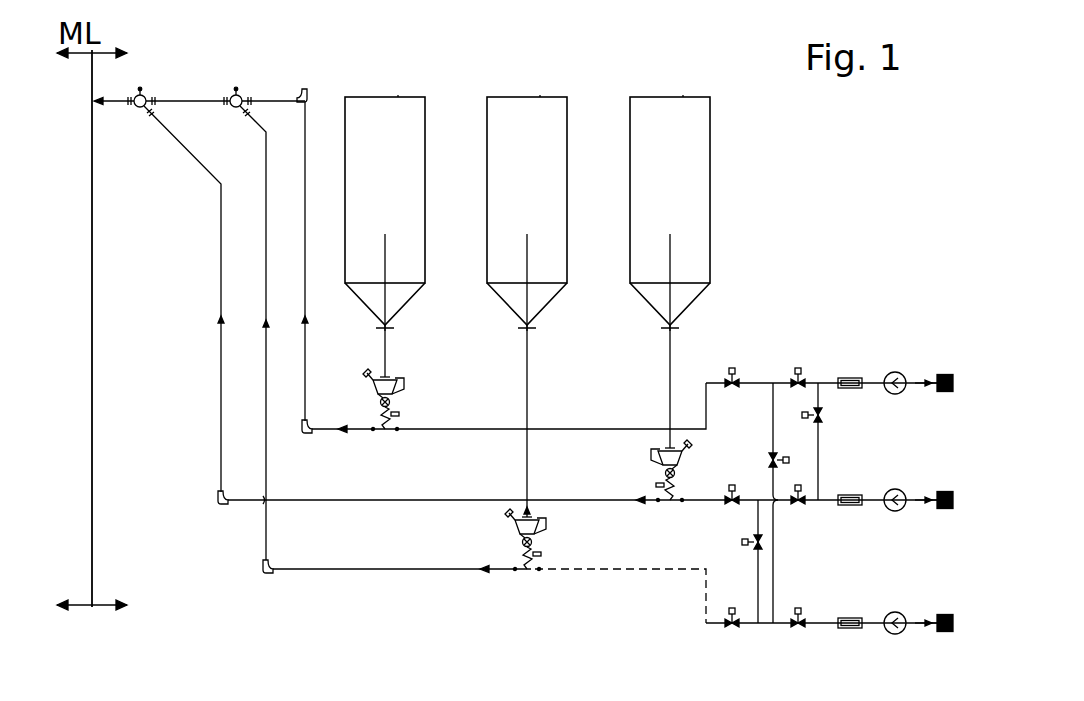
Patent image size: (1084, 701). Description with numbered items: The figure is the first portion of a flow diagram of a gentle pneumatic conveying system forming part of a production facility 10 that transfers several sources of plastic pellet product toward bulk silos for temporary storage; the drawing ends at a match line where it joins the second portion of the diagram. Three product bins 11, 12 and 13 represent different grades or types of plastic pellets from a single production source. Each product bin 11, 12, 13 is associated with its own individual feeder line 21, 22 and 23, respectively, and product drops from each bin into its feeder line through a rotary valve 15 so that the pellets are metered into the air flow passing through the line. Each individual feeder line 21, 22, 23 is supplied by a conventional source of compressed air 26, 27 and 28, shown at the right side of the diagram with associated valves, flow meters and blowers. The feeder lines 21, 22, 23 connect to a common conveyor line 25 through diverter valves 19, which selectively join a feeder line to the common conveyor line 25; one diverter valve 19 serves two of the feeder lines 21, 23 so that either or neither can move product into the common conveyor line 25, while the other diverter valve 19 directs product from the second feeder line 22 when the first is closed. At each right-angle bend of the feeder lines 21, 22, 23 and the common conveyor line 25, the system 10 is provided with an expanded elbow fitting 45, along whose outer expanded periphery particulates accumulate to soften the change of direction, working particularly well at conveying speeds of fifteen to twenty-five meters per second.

The production facility 10 is at (761, 244).
The product bin 11 is at (405, 231).
The product bin 12 is at (703, 180).
The product bin 13 is at (550, 100).
The rotary valve 15 is at (385, 385).
The diverter valve 19 is at (233, 94).
The first feeder line 21 is at (445, 429).
The second feeder line 22 is at (418, 500).
The third feeder line 23 is at (392, 569).
The common conveyor line 25 is at (112, 106).
The source of compressed air 26 is at (873, 348).
The source of compressed air 27 is at (880, 544).
The source of compressed air 28 is at (823, 639).
The expanded elbow fitting 45 is at (296, 96).